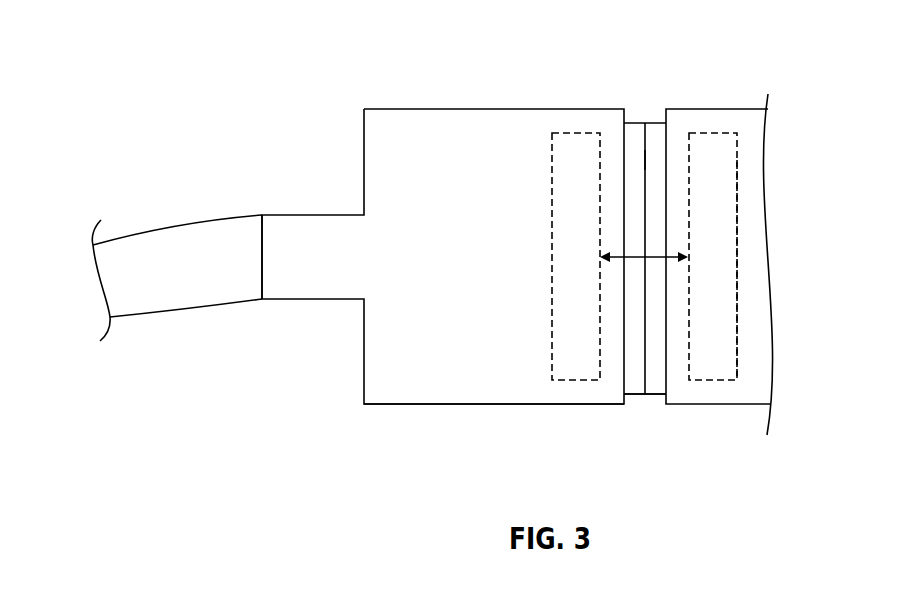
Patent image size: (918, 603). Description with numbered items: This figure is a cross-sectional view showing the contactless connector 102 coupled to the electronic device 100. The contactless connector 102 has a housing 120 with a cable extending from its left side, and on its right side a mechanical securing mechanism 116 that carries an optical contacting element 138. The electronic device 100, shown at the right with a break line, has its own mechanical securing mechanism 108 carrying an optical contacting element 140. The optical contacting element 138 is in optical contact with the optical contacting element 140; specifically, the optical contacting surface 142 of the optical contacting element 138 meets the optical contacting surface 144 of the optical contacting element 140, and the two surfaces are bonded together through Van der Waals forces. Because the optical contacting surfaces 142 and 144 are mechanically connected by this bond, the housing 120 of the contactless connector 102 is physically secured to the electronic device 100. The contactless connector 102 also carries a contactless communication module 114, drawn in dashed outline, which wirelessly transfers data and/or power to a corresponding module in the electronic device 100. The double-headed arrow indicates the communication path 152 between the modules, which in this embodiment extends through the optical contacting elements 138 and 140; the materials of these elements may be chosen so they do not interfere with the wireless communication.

The electronic device 100 is at (740, 417).
The contactless connector 102 is at (416, 415).
The mechanical securing mechanism 108 is at (657, 108).
The contactless communication module 114 is at (737, 176).
The mechanical securing mechanism 116 is at (637, 108).
The housing 120 is at (392, 110).
The optical contacting element 138 is at (636, 387).
The optical contacting element 140 is at (655, 386).
The optical contacting surface 142 is at (645, 159).
The optical contacting surface 144 is at (645, 177).
The communication path 152 is at (645, 257).